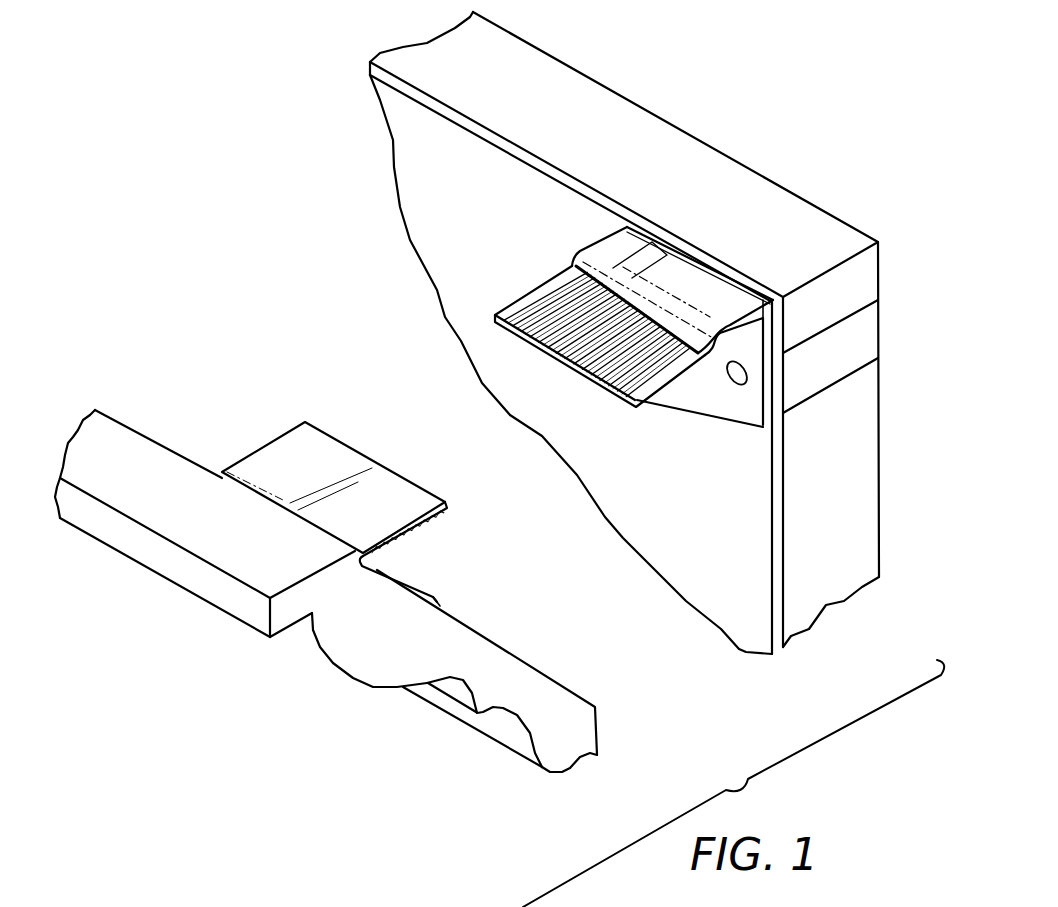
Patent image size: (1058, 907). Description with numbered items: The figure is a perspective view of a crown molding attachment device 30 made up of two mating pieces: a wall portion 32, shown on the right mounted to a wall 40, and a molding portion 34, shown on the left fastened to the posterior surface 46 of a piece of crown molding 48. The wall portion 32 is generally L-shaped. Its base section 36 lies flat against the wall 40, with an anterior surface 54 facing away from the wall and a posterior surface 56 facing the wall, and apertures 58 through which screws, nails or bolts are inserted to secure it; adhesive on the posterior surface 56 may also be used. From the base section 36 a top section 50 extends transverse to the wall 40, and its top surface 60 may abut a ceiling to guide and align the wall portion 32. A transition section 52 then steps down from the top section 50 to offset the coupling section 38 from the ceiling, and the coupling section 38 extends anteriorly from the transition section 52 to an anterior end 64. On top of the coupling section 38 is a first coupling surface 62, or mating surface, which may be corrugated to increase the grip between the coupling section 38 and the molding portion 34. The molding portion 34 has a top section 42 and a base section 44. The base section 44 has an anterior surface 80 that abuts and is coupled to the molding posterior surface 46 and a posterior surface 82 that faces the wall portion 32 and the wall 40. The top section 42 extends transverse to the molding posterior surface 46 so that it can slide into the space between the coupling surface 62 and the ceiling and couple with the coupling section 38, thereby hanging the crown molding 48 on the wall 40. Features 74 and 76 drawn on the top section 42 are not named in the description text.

The crown molding attachment device 30 is at (270, 226).
The wall portion 32 is at (579, 289).
The molding portion 34 is at (345, 565).
The base section 36 is at (656, 333).
The coupling section 38 is at (645, 389).
The wall 40 is at (726, 532).
The top section 42 is at (353, 559).
The base section 44 is at (412, 588).
The posterior surface 46 is at (560, 680).
The crown molding 48 is at (568, 732).
The top section 50 is at (760, 315).
The transition section 52 is at (587, 258).
The anterior surface 54 is at (753, 380).
The posterior surface 56 is at (783, 415).
The apertures 58 is at (732, 383).
The top surface 60 is at (663, 255).
The first coupling surface 62 is at (603, 349).
The anterior end 64 is at (494, 318).
The upper plate 74 is at (317, 438).
The serrations 76 is at (408, 534).
The anterior surface 80 is at (378, 571).
The posterior surface 82 is at (420, 586).